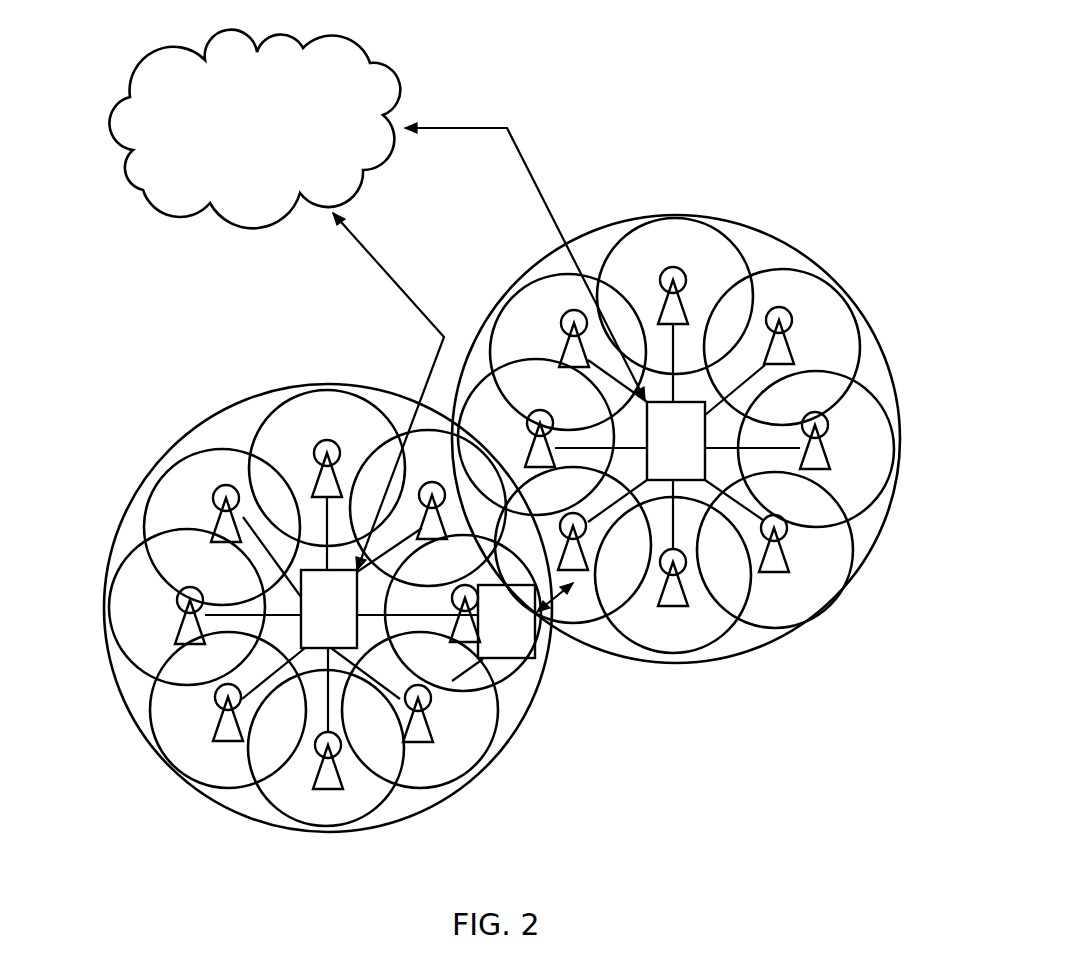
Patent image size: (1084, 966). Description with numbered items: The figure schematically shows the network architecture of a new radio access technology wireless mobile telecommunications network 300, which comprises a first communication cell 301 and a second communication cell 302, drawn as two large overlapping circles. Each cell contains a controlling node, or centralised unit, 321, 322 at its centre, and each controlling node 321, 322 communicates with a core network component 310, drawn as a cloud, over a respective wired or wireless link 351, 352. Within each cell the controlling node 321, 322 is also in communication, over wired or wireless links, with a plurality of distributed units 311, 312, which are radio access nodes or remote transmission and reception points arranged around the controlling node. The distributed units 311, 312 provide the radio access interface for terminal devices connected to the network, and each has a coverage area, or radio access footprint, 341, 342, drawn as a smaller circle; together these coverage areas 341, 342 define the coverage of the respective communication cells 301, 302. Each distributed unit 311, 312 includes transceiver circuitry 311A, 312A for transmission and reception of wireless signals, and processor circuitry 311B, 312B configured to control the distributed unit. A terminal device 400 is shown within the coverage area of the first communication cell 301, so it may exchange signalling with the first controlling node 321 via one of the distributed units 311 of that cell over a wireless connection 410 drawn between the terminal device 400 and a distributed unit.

The new RAT wireless mobile telecommunications network/system 300 is at (675, 97).
The first communication cell 301 is at (233, 402).
The second communication cell 302 is at (682, 215).
The core network component 310 is at (283, 138).
The distributed units 311 is at (326, 647).
The transceiver circuitry 311A is at (430, 712).
The processor circuitry 311B is at (420, 728).
The distributed units 312 is at (744, 471).
The transceiver circuitry 312A is at (787, 538).
The processor circuitry 312B is at (775, 558).
The controlling node 321 is at (352, 622).
The controlling node 322 is at (699, 458).
The coverage area 341 is at (140, 548).
The coverage area 342 is at (782, 265).
The wired or wireless link 351 is at (386, 272).
The wired or wireless link 352 is at (470, 127).
The terminal device 400 is at (502, 660).
The wireless link between UE and access point 410 is at (578, 597).